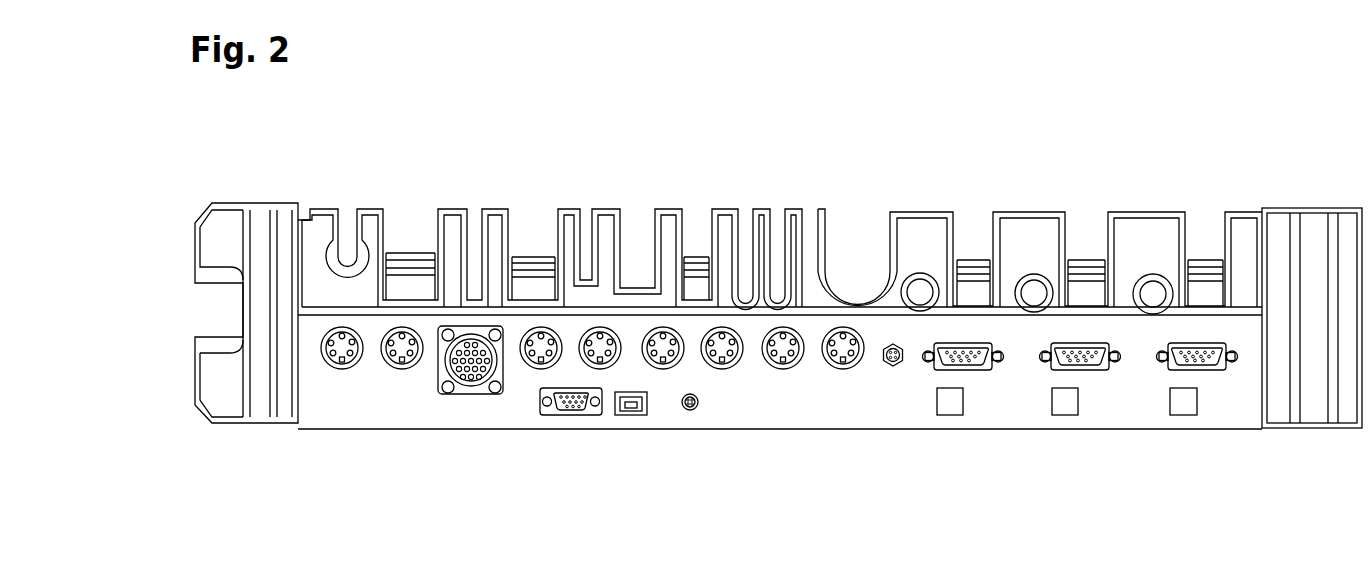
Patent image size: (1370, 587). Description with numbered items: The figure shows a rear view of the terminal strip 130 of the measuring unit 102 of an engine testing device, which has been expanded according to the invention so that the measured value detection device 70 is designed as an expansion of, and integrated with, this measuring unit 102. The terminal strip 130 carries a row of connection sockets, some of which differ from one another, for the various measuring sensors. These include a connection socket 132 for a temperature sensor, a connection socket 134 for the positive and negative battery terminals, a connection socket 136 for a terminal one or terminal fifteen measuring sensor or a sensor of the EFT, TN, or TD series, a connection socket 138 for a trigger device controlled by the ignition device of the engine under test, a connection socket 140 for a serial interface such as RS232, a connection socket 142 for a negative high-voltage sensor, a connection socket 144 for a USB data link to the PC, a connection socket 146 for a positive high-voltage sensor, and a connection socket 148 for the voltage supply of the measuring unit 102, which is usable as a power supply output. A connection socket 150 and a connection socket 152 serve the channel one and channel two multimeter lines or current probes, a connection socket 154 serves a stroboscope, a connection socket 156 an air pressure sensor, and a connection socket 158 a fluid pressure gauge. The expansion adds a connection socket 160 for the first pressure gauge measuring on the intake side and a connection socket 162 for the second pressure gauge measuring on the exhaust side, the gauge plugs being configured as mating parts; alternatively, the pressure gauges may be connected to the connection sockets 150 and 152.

The measured value detection device 70 is at (176, 292).
The measuring unit 102 is at (778, 315).
The terminal strip 130 is at (1251, 411).
The connection socket 132 is at (342, 369).
The connection socket 134 is at (402, 369).
The connection socket 136 is at (475, 386).
The connection socket 138 is at (541, 327).
The connection socket 140 is at (556, 414).
The connection socket 142 is at (600, 327).
The connection socket 144 is at (628, 415).
The connection socket 146 is at (663, 327).
The connection socket 148 is at (690, 410).
The connection socket 150 is at (722, 327).
The connection socket 152 is at (780, 368).
The connection socket 154 is at (845, 369).
The connection socket 156 is at (893, 344).
The connection socket 158 is at (983, 369).
The connection socket 160 is at (1085, 369).
The connection socket 162 is at (1176, 367).